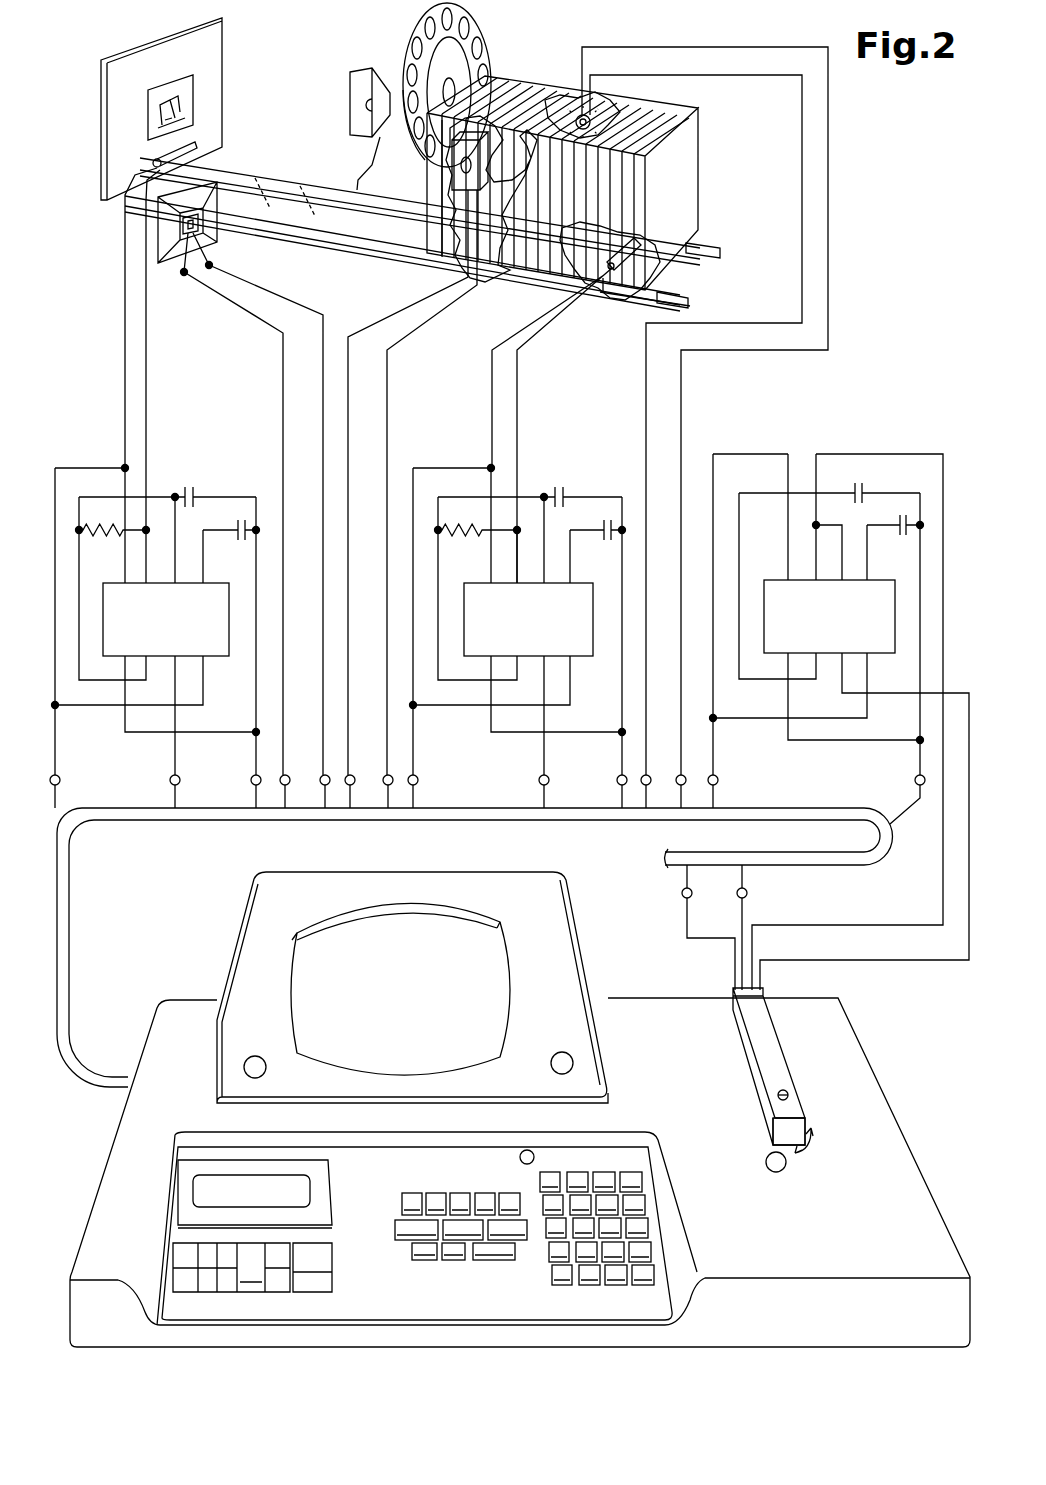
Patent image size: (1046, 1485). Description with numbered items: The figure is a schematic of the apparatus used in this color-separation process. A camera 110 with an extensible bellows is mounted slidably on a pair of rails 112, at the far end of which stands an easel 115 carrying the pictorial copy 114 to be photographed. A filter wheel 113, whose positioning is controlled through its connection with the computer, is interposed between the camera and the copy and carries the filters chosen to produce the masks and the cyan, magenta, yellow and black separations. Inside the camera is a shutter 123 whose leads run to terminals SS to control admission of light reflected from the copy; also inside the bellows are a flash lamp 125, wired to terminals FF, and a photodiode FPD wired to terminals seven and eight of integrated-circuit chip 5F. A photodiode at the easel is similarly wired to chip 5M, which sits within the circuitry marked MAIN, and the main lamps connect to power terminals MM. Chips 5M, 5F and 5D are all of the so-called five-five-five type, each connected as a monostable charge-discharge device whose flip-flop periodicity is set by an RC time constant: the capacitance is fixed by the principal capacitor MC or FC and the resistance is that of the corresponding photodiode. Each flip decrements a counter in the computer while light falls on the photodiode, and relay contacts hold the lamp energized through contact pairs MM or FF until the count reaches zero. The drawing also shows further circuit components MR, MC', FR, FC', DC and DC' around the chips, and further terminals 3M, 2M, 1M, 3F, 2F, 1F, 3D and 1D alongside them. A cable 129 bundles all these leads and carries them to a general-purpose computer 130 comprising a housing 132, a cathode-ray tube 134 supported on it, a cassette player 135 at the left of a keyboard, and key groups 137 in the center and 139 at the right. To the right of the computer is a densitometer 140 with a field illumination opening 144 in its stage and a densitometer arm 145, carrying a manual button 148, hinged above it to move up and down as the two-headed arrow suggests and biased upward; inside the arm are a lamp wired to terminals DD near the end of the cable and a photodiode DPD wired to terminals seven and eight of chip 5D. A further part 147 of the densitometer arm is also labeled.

The easel 115 is at (142, 56).
The pictorial copy 114 is at (193, 100).
The filter wheel 113 is at (490, 42).
The flash lamp 125 is at (575, 120).
The shutter 123 is at (442, 445).
The photodiode FPD is at (615, 249).
The camera 110 is at (508, 282).
The rails 112 is at (172, 266).
The resistor MR is at (100, 538).
The principal capacitor MC is at (231, 546).
The capacitor MC' is at (167, 488).
The integrated circuit chip 5M is at (229, 632).
The resistor FR is at (462, 538).
The principal capacitor FC is at (598, 546).
The capacitor FC' is at (530, 488).
The integrated circuit chip 5F is at (593, 632).
The capacitor DC is at (895, 540).
The capacitor DC' is at (829, 485).
The integrated circuit chip 5D is at (895, 630).
The terminal 3M is at (87, 626).
The terminal 2M is at (164, 720).
The terminal 1M is at (246, 641).
The power terminals MM is at (305, 768).
The terminals SS is at (369, 768).
The terminal 3F is at (449, 626).
The terminal 2F is at (532, 720).
The terminal 1F is at (613, 641).
The terminals FF is at (663, 768).
The terminal 3D is at (748, 619).
The terminal 1D is at (908, 658).
The terminals DD is at (714, 927).
The cable 129 is at (70, 982).
The general-purpose computer 130 is at (582, 912).
The cathode-ray tube 134 is at (494, 926).
The housing 132 is at (674, 1052).
The densitometer 140 is at (870, 1062).
The manual button 148 is at (786, 1090).
The photodiode DPD is at (798, 1103).
The pen tip 147 is at (772, 1130).
The field illumination opening 144 is at (766, 1164).
The densitometer arm 145 is at (821, 1152).
The key group 139 is at (607, 1170).
The key group 137 is at (450, 1192).
The cassette player 135 is at (170, 1188).